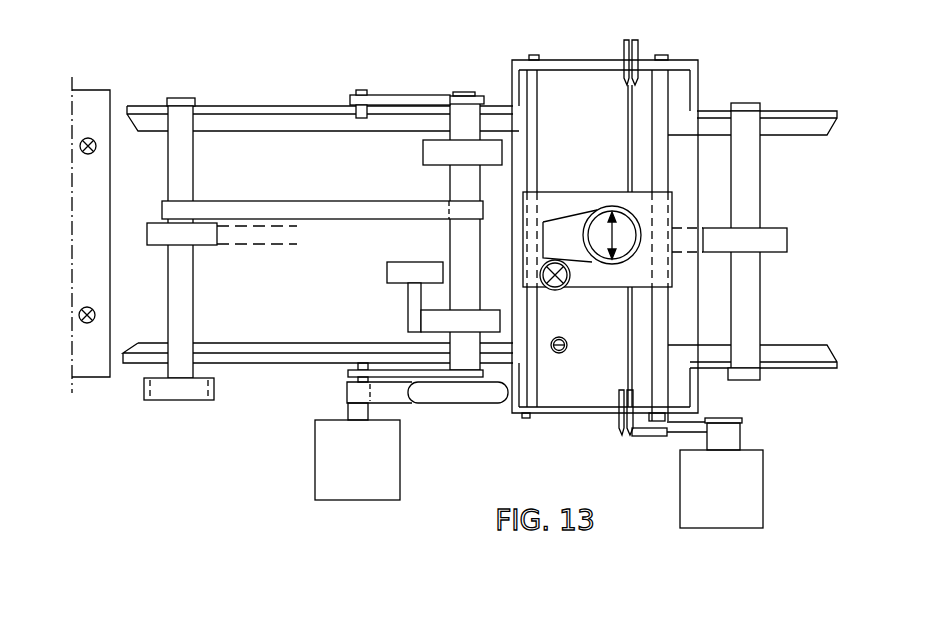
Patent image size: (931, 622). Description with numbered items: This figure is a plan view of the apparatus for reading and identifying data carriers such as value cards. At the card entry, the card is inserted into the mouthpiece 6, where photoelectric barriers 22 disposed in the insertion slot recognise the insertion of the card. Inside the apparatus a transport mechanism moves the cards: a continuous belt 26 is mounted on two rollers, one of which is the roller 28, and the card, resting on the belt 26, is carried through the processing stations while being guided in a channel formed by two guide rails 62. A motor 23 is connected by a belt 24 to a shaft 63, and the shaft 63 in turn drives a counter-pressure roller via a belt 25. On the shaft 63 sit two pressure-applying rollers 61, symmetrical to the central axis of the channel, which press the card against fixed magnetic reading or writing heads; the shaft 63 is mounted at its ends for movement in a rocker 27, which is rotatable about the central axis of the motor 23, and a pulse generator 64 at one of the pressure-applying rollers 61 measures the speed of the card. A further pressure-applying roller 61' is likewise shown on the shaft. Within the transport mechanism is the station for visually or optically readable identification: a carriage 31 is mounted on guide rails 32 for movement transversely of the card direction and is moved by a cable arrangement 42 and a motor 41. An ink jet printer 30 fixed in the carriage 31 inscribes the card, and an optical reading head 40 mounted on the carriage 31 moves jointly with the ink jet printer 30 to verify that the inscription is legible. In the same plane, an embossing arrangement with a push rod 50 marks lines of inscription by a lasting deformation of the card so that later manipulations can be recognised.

The mouthpiece 6 is at (90, 108).
The photoelectric barriers 22 is at (97, 148).
The guide rails 62 is at (292, 118).
The guide rails 32 is at (533, 56).
The cable arrangement 42 is at (630, 100).
The rocker 27 is at (407, 95).
The shaft 63 is at (470, 95).
The upper block 61' is at (462, 102).
The belt 25 is at (322, 220).
The continuous belt 26 is at (246, 234).
The pulse generator 64 is at (393, 277).
The pressure-applying rollers 61 is at (464, 293).
The carriage 31 is at (558, 205).
The ink jet printer 30 is at (601, 217).
The optical reading head 40 is at (563, 287).
The push rod 50 is at (560, 354).
The roller 28 is at (770, 237).
The belt 24 is at (405, 395).
The motor 23 is at (333, 468).
The motor 41 is at (693, 483).